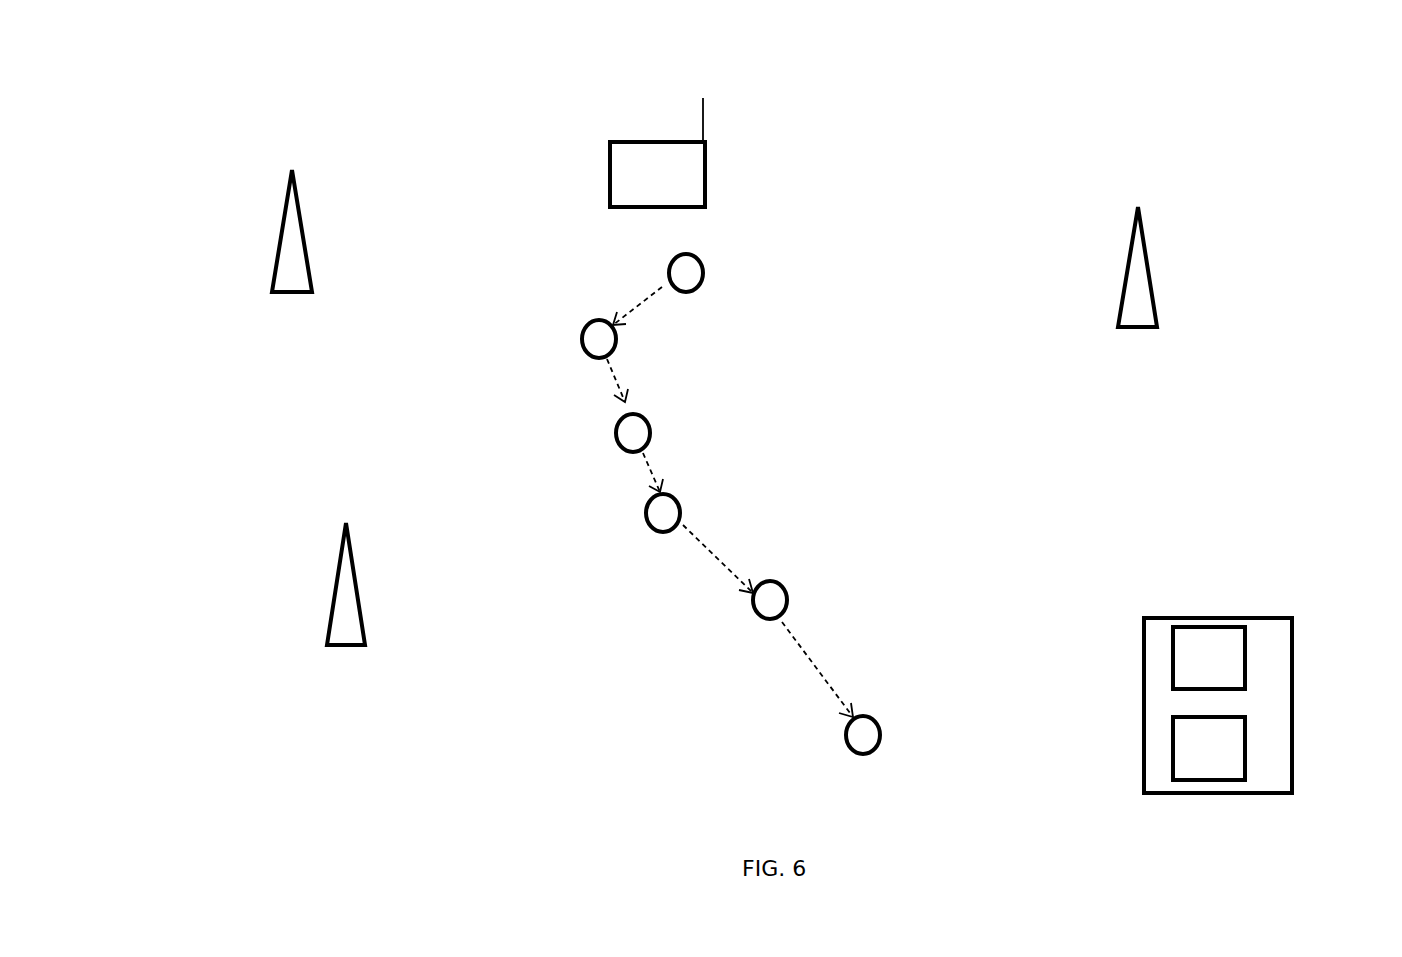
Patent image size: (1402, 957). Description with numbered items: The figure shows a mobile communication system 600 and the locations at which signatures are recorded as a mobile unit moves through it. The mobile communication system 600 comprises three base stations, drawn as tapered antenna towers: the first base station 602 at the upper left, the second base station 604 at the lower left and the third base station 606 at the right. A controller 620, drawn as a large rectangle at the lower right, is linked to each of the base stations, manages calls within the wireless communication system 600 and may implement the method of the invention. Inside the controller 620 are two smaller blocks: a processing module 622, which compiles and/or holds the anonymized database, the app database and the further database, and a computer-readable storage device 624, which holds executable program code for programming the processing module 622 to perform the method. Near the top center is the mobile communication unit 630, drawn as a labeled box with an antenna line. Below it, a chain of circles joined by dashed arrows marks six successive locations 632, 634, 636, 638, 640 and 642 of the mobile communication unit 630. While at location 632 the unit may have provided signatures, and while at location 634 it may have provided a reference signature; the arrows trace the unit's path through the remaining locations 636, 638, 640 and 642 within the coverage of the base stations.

The mobile communication system 600 is at (286, 70).
The base station BS1 602 is at (280, 230).
The base station BS2 604 is at (330, 595).
The base station BS3 606 is at (1147, 253).
The controller 620 is at (1272, 618).
The processing module 622 is at (1173, 655).
The computer-readable storage device 624 is at (1173, 748).
The mobile communication unit MCU1 630 is at (705, 170).
The first location 632 is at (703, 273).
The second location 634 is at (582, 340).
The third location 636 is at (615, 439).
The fourth location 638 is at (642, 518).
The fifth location 640 is at (752, 615).
The sixth location 642 is at (838, 736).